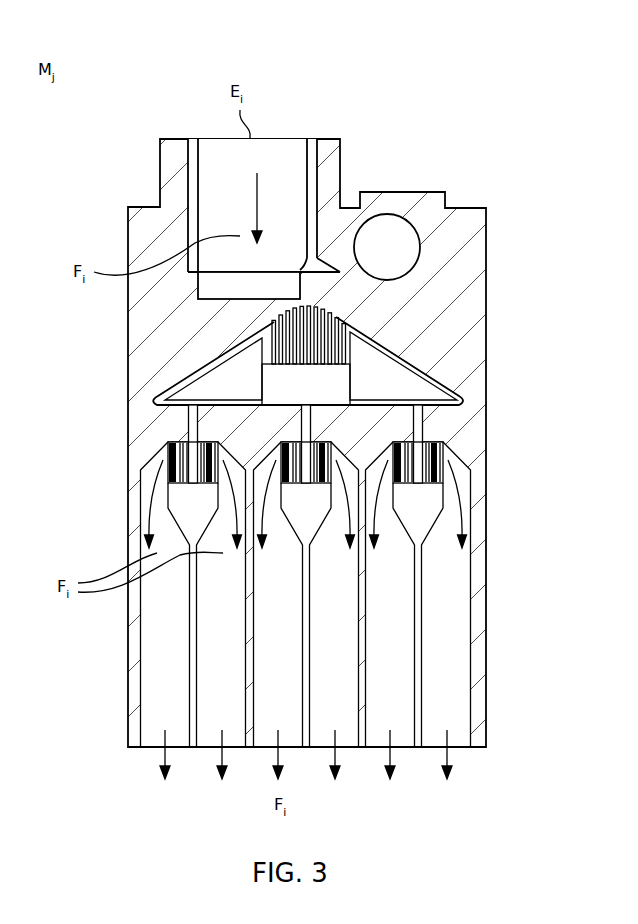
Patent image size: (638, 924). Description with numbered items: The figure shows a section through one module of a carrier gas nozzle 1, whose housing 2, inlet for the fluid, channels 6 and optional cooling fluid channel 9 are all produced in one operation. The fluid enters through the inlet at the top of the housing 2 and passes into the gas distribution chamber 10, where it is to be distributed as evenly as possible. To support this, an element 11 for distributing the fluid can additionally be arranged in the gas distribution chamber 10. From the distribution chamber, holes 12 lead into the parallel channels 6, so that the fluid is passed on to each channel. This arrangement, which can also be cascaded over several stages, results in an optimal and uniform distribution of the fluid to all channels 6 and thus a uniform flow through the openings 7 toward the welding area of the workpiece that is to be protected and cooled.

The carrier gas nozzle 1 is at (319, 411).
The housing 2 is at (486, 258).
The channels 6 is at (170, 677).
The openings 7 is at (428, 748).
The cooling fluid channel 9 is at (391, 225).
The gas distribution chamber 10 is at (435, 380).
The element for distributing the fluid 11 is at (438, 465).
The holes 12 is at (420, 420).